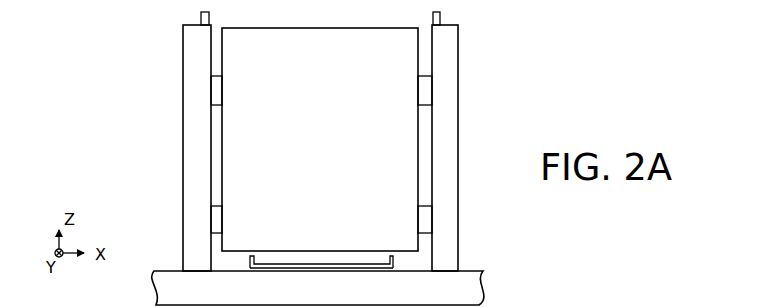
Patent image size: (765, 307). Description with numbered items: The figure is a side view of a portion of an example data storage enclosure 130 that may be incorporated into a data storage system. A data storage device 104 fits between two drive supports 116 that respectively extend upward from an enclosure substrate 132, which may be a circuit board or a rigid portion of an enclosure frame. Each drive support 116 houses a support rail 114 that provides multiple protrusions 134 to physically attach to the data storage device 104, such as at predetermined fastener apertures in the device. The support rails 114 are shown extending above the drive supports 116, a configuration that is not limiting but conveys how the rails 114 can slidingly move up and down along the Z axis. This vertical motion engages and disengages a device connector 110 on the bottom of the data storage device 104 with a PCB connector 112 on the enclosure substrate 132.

The data storage enclosure 130 is at (109, 28).
The support rail 114 is at (201, 19).
The drive support 116 is at (185, 170).
The data storage device 104 is at (336, 148).
The protrusion 134 is at (426, 92).
The device connector 110 is at (307, 252).
The PCB connector 112 is at (377, 271).
The enclosure substrate 132 is at (202, 298).